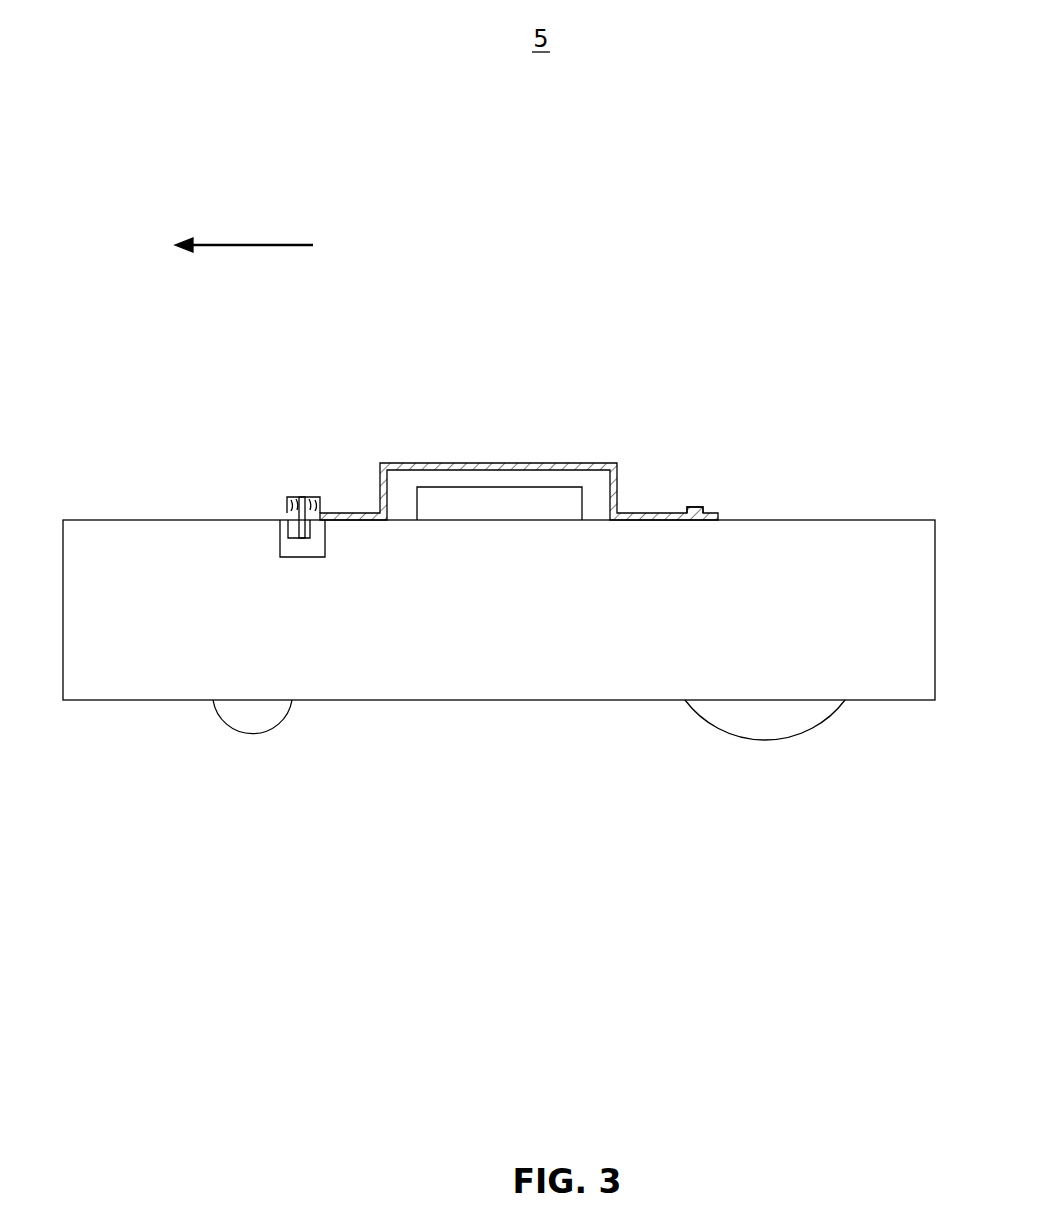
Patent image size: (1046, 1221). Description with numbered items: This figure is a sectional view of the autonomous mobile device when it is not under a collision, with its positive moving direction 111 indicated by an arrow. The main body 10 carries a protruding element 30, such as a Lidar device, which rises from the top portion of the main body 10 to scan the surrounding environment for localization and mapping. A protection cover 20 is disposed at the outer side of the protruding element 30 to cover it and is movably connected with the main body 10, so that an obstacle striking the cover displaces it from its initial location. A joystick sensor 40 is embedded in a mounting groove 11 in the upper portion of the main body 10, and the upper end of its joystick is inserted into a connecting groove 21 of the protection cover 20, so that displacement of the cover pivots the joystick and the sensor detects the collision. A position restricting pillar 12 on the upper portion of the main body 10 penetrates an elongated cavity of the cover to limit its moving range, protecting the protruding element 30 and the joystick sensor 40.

The main body 10 is at (818, 540).
The mounting groove 11 is at (285, 515).
The position restricting pillar 12 is at (697, 508).
The protection cover 20 is at (618, 472).
The connecting groove 21 is at (296, 497).
The protruding element 30 is at (497, 503).
The joystick sensor 40 is at (305, 497).
The positive moving direction 111 is at (267, 245).